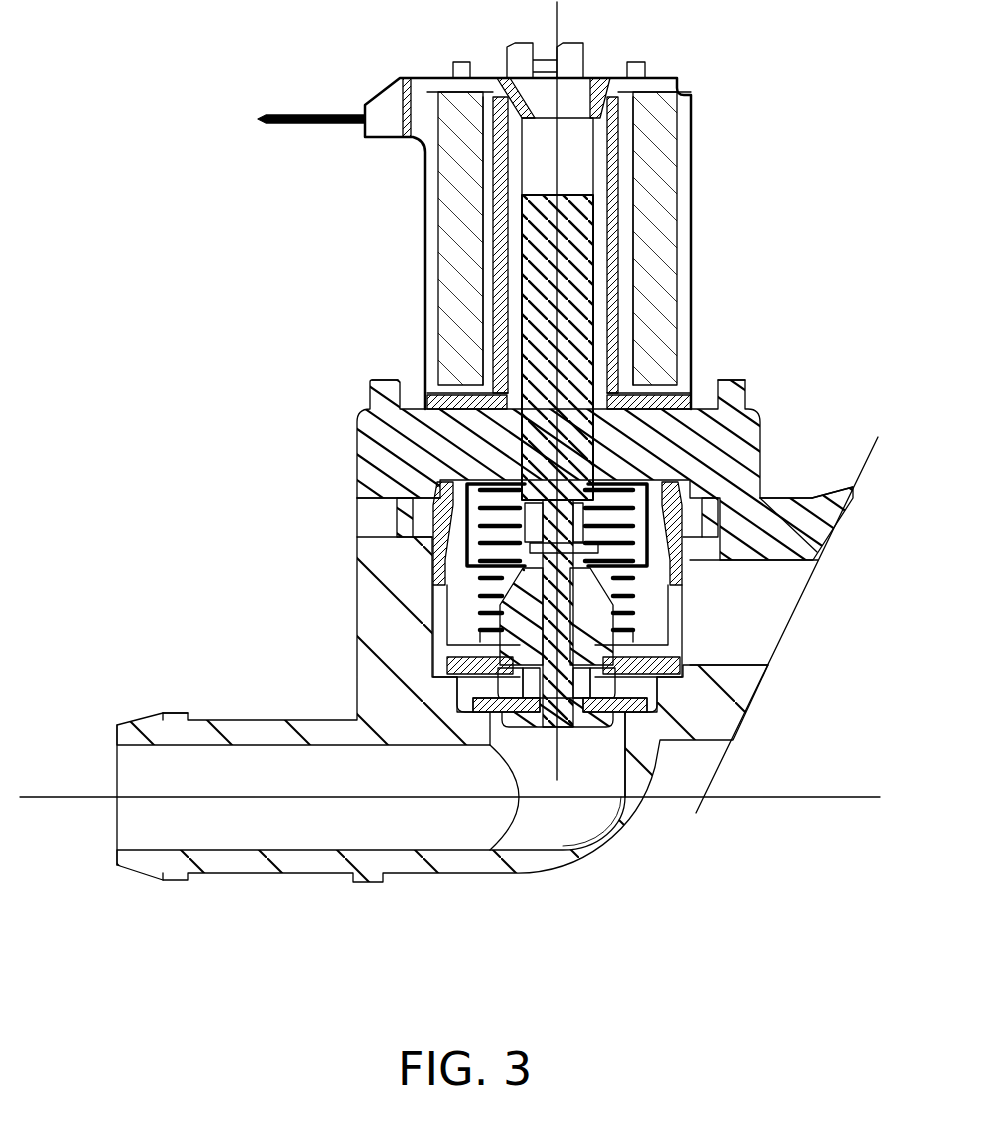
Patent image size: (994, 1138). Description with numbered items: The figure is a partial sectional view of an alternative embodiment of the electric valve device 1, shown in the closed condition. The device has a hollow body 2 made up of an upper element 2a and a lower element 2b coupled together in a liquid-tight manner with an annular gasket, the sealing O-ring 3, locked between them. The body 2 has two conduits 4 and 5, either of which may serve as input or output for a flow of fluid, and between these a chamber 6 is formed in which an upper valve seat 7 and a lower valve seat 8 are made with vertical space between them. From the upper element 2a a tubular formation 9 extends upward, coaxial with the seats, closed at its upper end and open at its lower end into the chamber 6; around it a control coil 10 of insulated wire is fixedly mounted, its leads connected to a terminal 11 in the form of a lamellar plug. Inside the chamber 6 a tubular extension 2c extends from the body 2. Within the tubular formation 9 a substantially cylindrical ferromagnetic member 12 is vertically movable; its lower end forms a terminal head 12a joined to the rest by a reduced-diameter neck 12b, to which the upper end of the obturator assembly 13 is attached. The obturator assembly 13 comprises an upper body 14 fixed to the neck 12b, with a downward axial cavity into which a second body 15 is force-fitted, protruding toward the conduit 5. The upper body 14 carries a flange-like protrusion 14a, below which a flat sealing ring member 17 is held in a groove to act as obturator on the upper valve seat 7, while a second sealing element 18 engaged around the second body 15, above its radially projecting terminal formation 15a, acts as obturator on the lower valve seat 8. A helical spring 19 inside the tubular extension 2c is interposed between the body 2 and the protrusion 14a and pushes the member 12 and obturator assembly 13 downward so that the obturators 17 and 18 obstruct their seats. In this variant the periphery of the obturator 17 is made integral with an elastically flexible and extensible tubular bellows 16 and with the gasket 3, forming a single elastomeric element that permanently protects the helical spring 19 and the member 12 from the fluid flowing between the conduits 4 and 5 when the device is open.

The electric valve device 1 is at (757, 237).
The hollow body 2 is at (355, 601).
The upper element 2a is at (733, 385).
The lower element 2b is at (817, 493).
The tubular extension 2c is at (433, 486).
The sealing O-ring 3 is at (722, 523).
The conduit 4 is at (765, 653).
The conduit 5 is at (232, 842).
The chamber 6 is at (463, 600).
The upper valve seat 7 is at (655, 705).
The lower valve seat 8 is at (602, 693).
The tubular formation 9 is at (470, 175).
The control coil 10 is at (665, 188).
The terminal 11 is at (315, 112).
The ferromagnetic member 12 is at (530, 285).
The terminal head 12a is at (462, 557).
The neck 12b is at (402, 520).
The obturator assembly 13 is at (445, 668).
The upper body 14 is at (640, 590).
The protrusion 14a is at (675, 647).
The second body 15 is at (572, 690).
The terminal formation 15a is at (607, 800).
The tubular bellows 16 is at (690, 533).
The sealing ring member 17 is at (472, 705).
The second sealing element 18 is at (490, 707).
The helical spring 19 is at (643, 473).